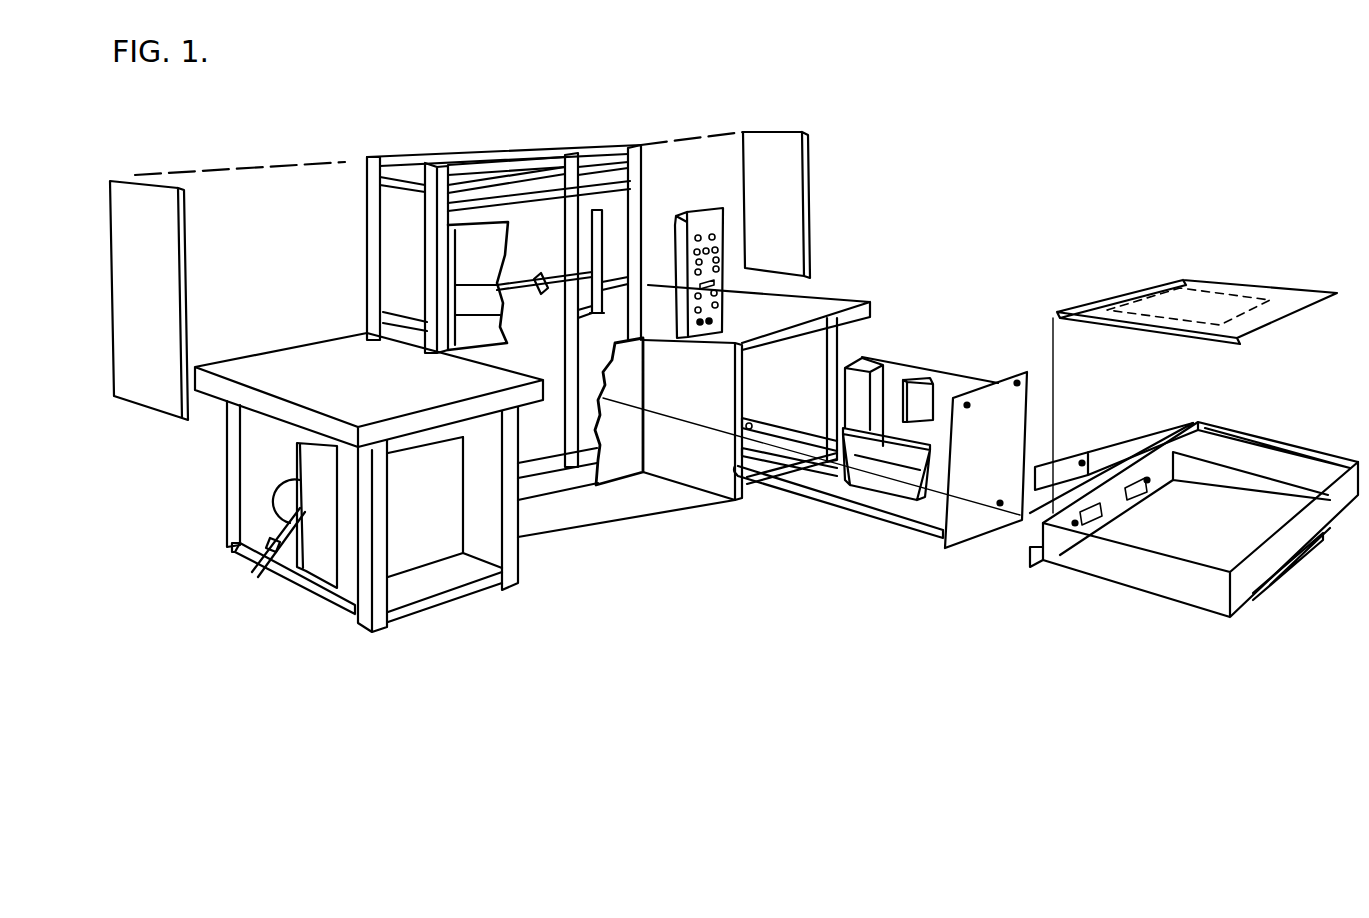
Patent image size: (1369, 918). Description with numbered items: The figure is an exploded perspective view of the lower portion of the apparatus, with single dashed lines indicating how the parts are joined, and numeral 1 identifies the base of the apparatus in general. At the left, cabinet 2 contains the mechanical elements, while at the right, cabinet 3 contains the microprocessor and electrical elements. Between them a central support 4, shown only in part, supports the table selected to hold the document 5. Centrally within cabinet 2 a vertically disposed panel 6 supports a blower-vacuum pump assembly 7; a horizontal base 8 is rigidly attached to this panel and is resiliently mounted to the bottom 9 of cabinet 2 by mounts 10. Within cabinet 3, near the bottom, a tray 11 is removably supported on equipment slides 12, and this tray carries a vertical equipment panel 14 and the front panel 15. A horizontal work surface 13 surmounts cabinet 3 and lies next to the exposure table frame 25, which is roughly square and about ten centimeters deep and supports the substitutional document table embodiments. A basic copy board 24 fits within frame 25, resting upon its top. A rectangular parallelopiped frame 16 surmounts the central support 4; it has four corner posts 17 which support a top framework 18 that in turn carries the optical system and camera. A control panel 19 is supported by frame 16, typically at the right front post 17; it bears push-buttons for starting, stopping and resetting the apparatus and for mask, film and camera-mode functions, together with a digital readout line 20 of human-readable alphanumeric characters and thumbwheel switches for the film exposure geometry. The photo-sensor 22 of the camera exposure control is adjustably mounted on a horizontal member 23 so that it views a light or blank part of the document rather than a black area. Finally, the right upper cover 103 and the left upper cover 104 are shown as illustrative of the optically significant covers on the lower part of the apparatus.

The base 1 is at (537, 598).
The cabinet 2 is at (369, 482).
The cabinet 3 is at (835, 416).
The central support 4 is at (632, 446).
The document 5 is at (1262, 305).
The panel 6 is at (328, 549).
The blower-vacuum pump assembly 7 is at (290, 491).
The horizontal base 8 is at (262, 540).
The bottom 9 is at (340, 589).
The mounts 10 is at (273, 549).
The tray 11 is at (876, 503).
The equipment slides 12 is at (780, 432).
The horizontal work surface 13 is at (800, 316).
The vertical equipment panel 14 is at (912, 430).
The front panel 15 is at (998, 466).
The frame 16 is at (505, 294).
The corner posts 17 is at (372, 268).
The top framework 18 is at (522, 151).
The control panel 19 is at (714, 259).
The digital readout line 20 is at (718, 283).
The photo-sensor 22 is at (532, 292).
The horizontal member 23 is at (553, 278).
The basic copy board 24 is at (1144, 295).
The exposure table frame 25 is at (1153, 580).
The right upper cover 103 is at (785, 218).
The left upper cover 104 is at (158, 302).